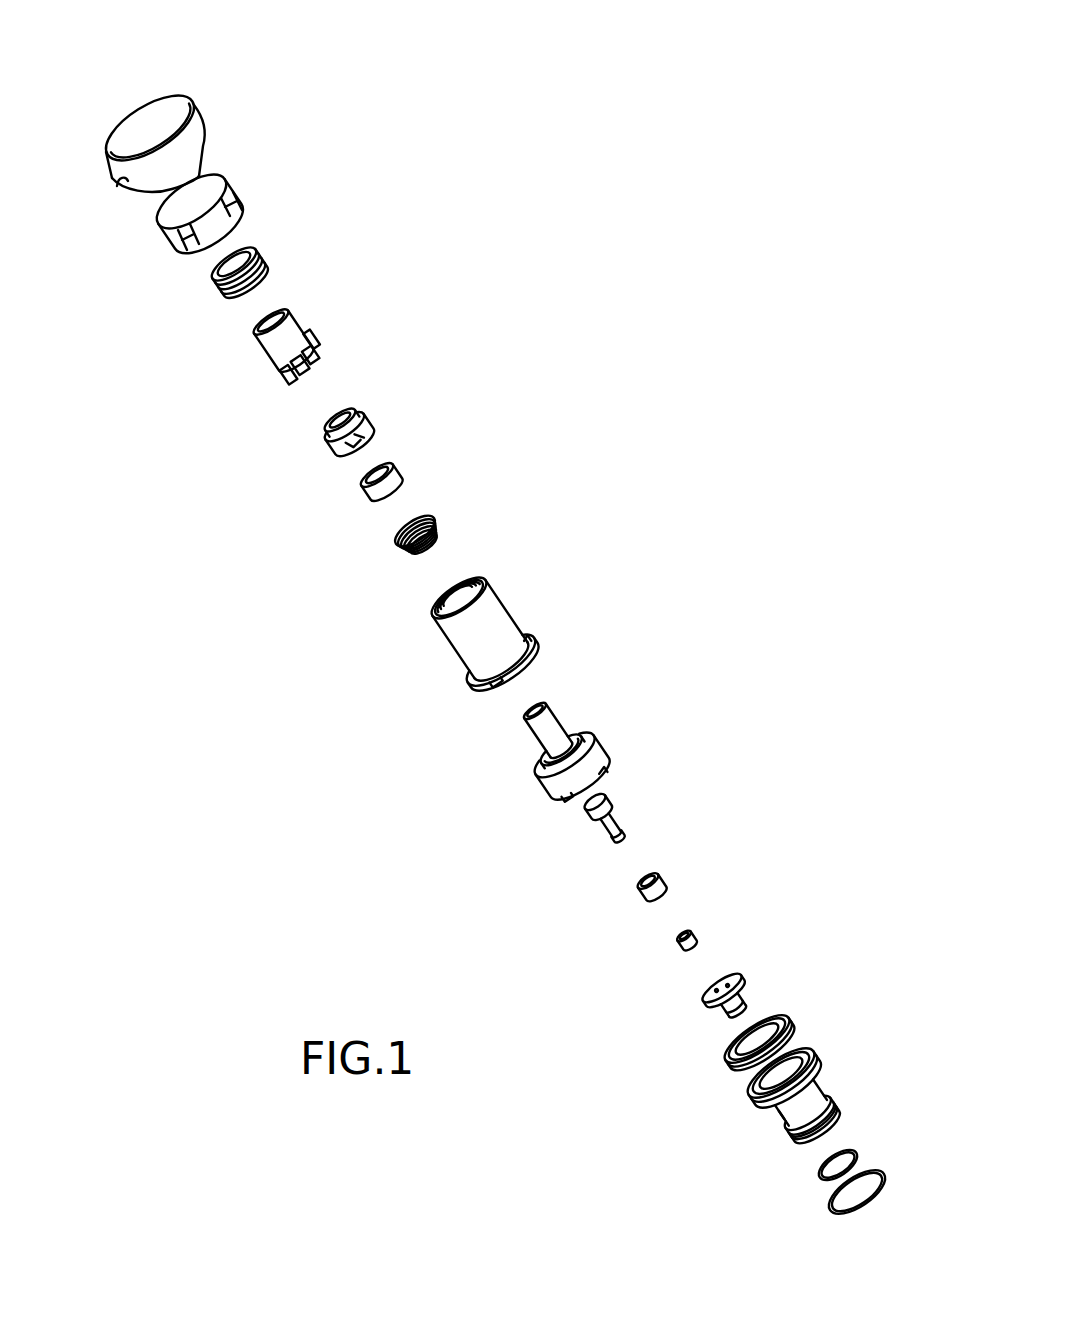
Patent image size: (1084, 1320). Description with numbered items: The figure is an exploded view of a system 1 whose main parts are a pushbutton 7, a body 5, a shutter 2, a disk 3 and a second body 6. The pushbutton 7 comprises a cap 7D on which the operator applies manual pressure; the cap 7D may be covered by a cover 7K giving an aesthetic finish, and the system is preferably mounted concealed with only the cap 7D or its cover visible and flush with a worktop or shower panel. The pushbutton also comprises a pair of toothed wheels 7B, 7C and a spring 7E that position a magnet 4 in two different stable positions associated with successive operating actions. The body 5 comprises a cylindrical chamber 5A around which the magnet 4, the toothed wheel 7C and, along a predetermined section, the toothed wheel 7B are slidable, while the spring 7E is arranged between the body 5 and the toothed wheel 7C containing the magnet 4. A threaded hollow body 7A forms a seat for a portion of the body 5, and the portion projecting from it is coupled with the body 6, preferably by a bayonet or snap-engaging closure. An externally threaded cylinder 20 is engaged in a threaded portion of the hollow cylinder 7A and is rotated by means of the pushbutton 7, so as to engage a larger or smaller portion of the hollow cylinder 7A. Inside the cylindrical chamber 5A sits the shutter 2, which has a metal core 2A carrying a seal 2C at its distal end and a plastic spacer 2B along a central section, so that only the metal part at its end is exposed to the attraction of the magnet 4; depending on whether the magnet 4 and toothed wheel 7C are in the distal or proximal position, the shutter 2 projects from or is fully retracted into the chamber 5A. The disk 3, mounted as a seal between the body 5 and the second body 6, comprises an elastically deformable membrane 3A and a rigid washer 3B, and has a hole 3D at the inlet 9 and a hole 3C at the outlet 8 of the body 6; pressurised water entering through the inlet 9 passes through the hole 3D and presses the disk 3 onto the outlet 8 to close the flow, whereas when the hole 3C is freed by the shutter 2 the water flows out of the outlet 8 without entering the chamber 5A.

The system 1 is at (514, 128).
The pushbutton 7 is at (193, 88).
The cover 7K is at (117, 186).
The cap 7D is at (230, 180).
The externally threaded cylinder 20 is at (257, 256).
The toothed wheel 7B is at (303, 325).
The toothed wheel 7C is at (363, 418).
The magnet 4 is at (396, 470).
The spring 7E is at (440, 527).
The threaded hollow body 7A is at (503, 603).
The cylindrical chamber 5A is at (562, 725).
The body 5 is at (613, 744).
The metal core 2A is at (607, 800).
The shutter 2 is at (855, 862).
The plastic spacer 2B is at (660, 880).
The seal 2C is at (697, 934).
The disk 3 is at (556, 936).
The hole 3D is at (707, 988).
The rigid washer 3B is at (703, 1001).
The hole 3C is at (730, 1027).
The elastically deformable membrane 3A is at (727, 1058).
The second body 6 is at (812, 1105).
The outlet 8 is at (836, 1126).
The inlet 9 is at (773, 1117).